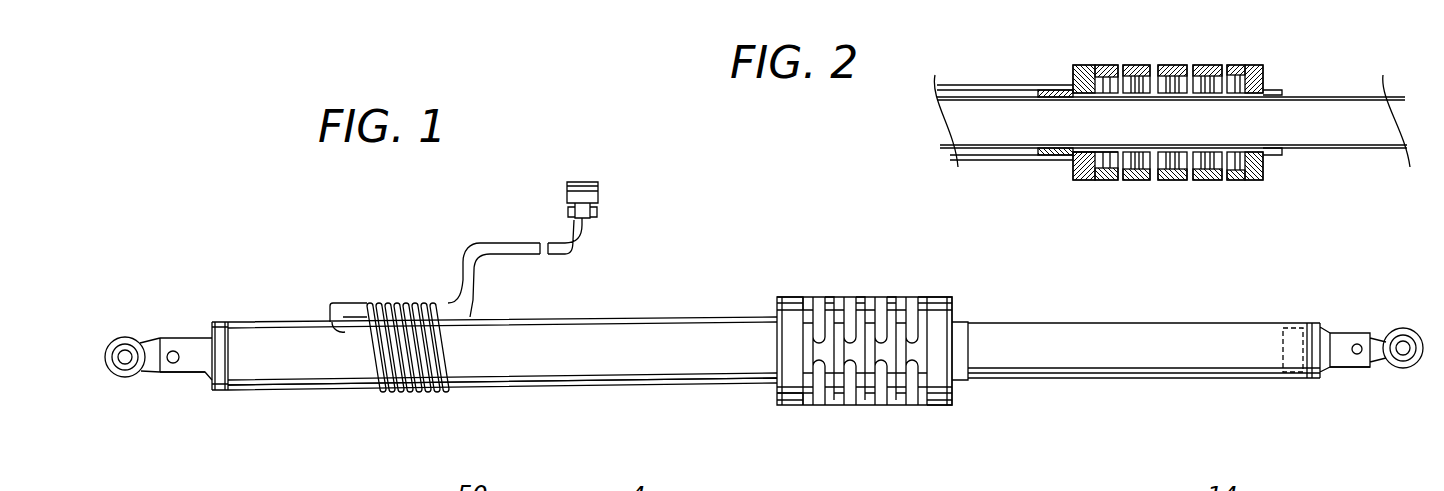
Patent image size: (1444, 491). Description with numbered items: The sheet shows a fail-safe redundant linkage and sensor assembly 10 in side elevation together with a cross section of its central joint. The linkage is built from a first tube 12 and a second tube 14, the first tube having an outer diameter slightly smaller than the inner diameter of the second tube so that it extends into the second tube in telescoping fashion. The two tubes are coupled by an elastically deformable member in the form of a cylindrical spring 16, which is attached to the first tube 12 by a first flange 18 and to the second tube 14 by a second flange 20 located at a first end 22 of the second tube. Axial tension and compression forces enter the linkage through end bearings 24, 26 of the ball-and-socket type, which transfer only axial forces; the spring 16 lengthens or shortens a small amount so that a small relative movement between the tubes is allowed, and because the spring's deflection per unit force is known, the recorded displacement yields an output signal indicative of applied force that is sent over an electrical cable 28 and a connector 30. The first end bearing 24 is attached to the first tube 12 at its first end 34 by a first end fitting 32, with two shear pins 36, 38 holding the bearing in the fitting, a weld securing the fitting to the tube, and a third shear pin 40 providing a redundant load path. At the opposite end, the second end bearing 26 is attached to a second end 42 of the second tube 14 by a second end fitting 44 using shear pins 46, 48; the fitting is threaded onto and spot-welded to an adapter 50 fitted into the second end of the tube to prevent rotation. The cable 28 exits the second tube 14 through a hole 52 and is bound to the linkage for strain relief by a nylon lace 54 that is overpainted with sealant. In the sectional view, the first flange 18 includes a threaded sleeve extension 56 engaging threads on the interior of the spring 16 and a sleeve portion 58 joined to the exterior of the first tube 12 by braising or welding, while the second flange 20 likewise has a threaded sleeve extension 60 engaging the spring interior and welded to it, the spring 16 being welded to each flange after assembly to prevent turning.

In FIG. 1, the fail-safe redundant linkage and sensor assembly 10 is at (524, 404).
In FIG. 1, the first tube 12 is at (1143, 380).
In FIG. 2, the first tube 12 is at (1343, 95).
In FIG. 1, the second tube 14 is at (613, 388).
In FIG. 2, the second tube 14 is at (1003, 88).
In FIG. 1, the cylindrical spring 16 is at (865, 407).
In FIG. 2, the cylindrical spring 16 is at (1170, 65).
In FIG. 1, the first flange 18 is at (952, 397).
In FIG. 2, the first flange 18 is at (1265, 80).
In FIG. 1, the second flange 20 is at (777, 310).
In FIG. 2, the second flange 20 is at (1073, 80).
In FIG. 1, the first end of the second tube 22 is at (773, 397).
In FIG. 2, the first end of the second tube 22 is at (1062, 168).
In FIG. 1, the first end bearing 24 is at (1402, 344).
In FIG. 1, the second end bearing 26 is at (125, 355).
In FIG. 1, the electrical cable 28 is at (503, 258).
In FIG. 1, the connector 30 is at (600, 195).
In FIG. 1, the first end fitting 32 is at (1347, 368).
In FIG. 1, the first end of the first tube 34 is at (1306, 396).
In FIG. 1, the shear pin 36 is at (1358, 354).
In FIG. 1, the shear pin 38 is at (1343, 331).
In FIG. 1, the third shear pin 40 is at (1300, 378).
In FIG. 1, the second end of the second tube 42 is at (246, 311).
In FIG. 1, the second end fitting 44 is at (168, 373).
In FIG. 1, the shear pin 46 is at (175, 363).
In FIG. 1, the shear pin 48 is at (190, 338).
In FIG. 1, the adapter 50 is at (222, 322).
In FIG. 1, the hole 52 is at (340, 333).
In FIG. 1, the nylon lace 54 is at (393, 303).
In FIG. 2, the threaded sleeve extension 56 is at (1245, 72).
In FIG. 2, the sleeve portion 58 is at (1272, 155).
In FIG. 2, the threaded sleeve extension 60 is at (1087, 80).